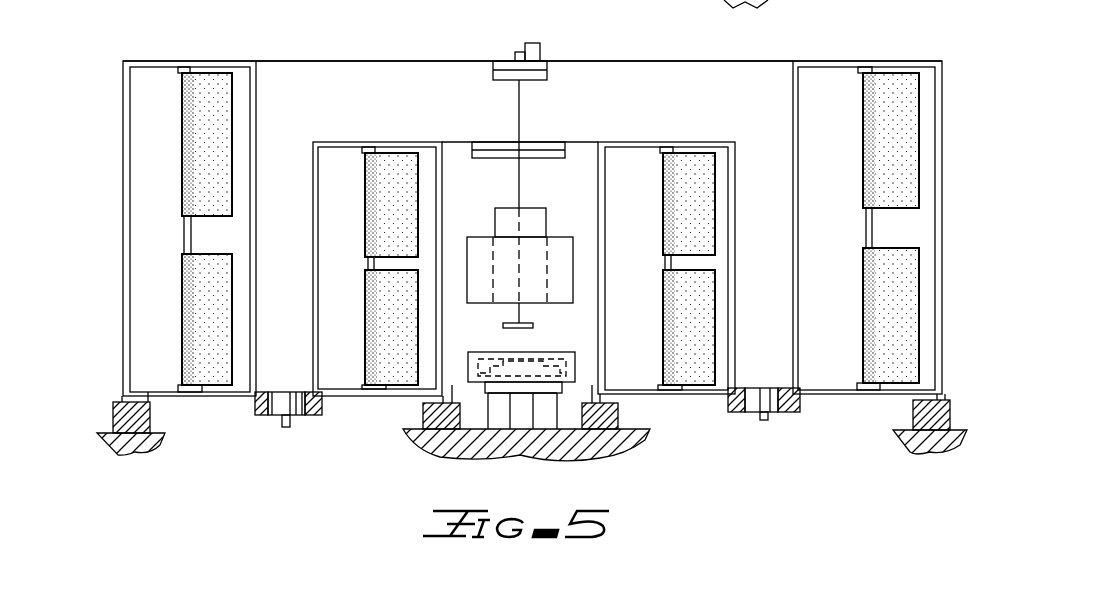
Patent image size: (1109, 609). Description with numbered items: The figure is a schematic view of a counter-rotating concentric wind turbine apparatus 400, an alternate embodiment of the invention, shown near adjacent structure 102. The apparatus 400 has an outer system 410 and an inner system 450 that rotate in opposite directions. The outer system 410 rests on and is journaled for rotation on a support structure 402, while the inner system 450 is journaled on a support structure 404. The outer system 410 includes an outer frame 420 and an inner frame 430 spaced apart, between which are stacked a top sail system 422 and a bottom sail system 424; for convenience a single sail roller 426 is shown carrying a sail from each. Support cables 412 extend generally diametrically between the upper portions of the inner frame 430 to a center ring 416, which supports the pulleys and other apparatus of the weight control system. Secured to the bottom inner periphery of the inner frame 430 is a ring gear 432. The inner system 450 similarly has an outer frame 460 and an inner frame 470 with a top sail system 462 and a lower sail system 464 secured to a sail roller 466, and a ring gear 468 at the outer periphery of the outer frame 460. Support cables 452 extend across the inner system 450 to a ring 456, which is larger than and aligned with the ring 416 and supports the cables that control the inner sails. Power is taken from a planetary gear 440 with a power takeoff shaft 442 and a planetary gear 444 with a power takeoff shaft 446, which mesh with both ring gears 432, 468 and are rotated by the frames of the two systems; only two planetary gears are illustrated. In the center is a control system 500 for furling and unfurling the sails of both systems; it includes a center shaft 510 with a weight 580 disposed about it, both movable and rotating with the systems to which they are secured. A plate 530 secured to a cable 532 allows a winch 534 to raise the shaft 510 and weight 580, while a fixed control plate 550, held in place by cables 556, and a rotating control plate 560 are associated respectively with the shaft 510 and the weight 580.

The adjacent structure 102 is at (826, 0).
The counter-rotating concentric wind turbine apparatus 400 is at (915, 50).
The support structure 402 is at (913, 407).
The support structure 404 is at (425, 405).
The outer system 410 is at (950, 114).
The support cables 412 is at (693, 35).
The center ring 416 is at (548, 56).
The outer frame 420 is at (942, 202).
The top sail system 422 is at (912, 168).
The bottom sail system 424 is at (915, 292).
The sail roller 426 is at (862, 218).
The inner frame 430 is at (864, 262).
The ring gear 432 is at (793, 413).
The planetary gear 440 is at (765, 420).
The power takeoff shaft 442 is at (750, 413).
The planetary gear 444 is at (289, 422).
The power takeoff shaft 446 is at (276, 428).
The inner system 450 is at (686, 125).
The support cables 452 is at (470, 142).
The ring 456 is at (552, 142).
The outer frame 460 is at (762, 227).
The top sail system 462 is at (705, 180).
The bottom sail system 464 is at (707, 315).
The sail roller 466 is at (665, 262).
The ring gear 468 is at (728, 395).
The inner frame 470 is at (600, 146).
The control system 500 is at (511, 202).
The center shaft 510 is at (495, 214).
The plate 530 is at (515, 329).
The cable 532 is at (512, 312).
The winch 534 is at (530, 43).
The fixed control plate 550 is at (483, 390).
The cables 556 is at (537, 418).
The rotating control plate 560 is at (580, 358).
The weight 580 is at (555, 237).